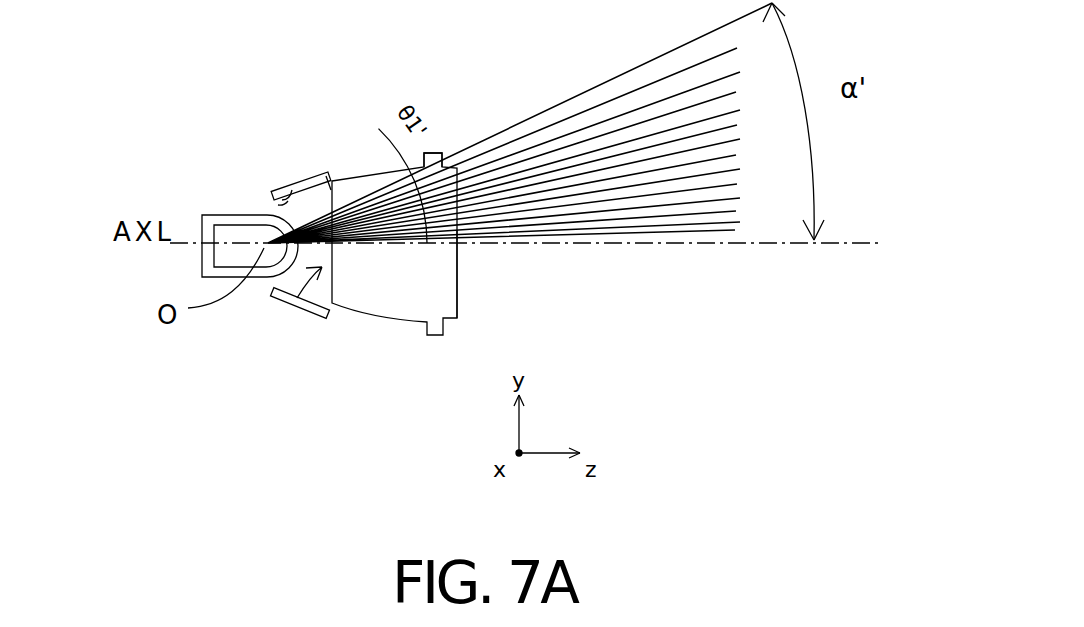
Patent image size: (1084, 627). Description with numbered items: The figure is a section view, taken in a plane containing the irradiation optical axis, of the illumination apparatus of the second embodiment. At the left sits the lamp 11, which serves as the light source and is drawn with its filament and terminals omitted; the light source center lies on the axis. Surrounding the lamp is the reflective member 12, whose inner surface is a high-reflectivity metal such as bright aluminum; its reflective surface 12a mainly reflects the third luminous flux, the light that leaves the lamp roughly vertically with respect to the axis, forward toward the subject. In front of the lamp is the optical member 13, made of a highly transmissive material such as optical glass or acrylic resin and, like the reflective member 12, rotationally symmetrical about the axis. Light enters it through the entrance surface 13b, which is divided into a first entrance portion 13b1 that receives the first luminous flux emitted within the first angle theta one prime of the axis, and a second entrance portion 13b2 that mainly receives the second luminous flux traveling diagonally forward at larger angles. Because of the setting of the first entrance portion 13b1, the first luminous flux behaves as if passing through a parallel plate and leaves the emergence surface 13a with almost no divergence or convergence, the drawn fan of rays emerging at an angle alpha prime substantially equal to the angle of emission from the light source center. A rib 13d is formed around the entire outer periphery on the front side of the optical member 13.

The lamp 11 is at (227, 216).
The reflective member 12 is at (282, 200).
The reflective surface 12a is at (278, 205).
The optical member 13 is at (383, 316).
The emergence surface 13a is at (460, 275).
The entrance surface 13b is at (293, 305).
The first entrance portion 13b1 is at (300, 178).
The second entrance portion 13b2 is at (329, 178).
The rib 13d is at (432, 150).